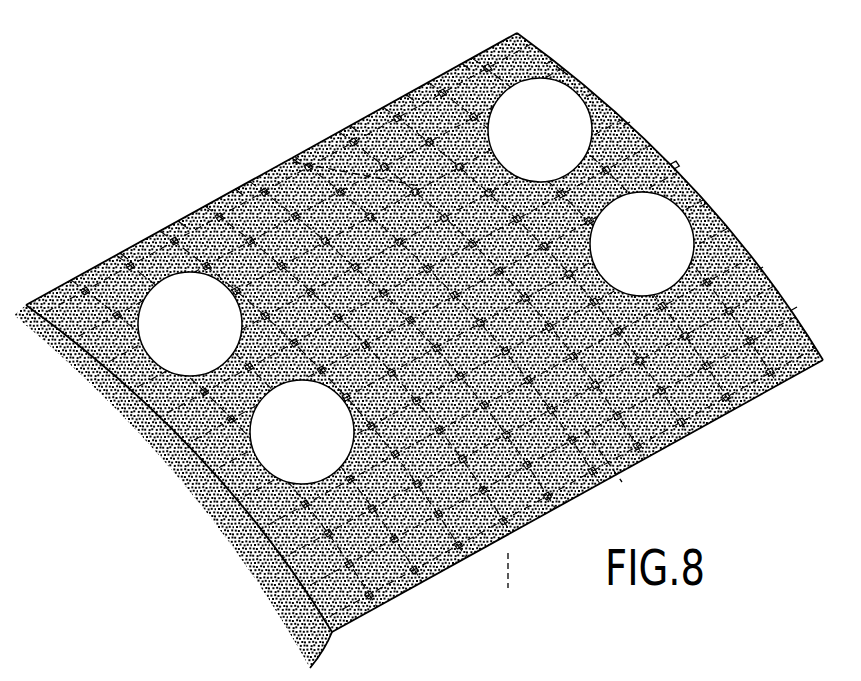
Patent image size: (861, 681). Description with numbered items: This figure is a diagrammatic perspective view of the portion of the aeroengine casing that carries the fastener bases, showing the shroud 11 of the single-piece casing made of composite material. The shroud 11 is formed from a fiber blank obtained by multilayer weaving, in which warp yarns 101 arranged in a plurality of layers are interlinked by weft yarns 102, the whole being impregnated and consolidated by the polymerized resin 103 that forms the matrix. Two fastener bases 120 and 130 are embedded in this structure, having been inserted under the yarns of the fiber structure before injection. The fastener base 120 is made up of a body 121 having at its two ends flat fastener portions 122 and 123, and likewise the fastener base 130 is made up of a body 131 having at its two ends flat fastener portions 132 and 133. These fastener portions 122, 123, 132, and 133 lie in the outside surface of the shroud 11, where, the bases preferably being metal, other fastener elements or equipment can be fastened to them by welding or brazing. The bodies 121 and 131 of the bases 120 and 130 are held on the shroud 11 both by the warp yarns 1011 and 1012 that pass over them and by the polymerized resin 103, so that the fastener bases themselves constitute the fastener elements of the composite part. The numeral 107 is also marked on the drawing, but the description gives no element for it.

The shroud 11 is at (767, 305).
The warp yarns 101 is at (460, 583).
The warp yarn 1011 is at (205, 198).
The warp yarn 1012 is at (393, 100).
The weft yarns 102 is at (268, 595).
The polymerized resin 103 is at (707, 435).
The grid line 107 is at (492, 617).
The fastener base 120 is at (562, 72).
The body 121 is at (293, 161).
The fastener portion 122 is at (187, 348).
The fastener portion 123 is at (543, 122).
The fastener base 130 is at (675, 187).
The body 131 is at (622, 482).
The fastener portion 132 is at (293, 442).
The fastener portion 133 is at (663, 235).